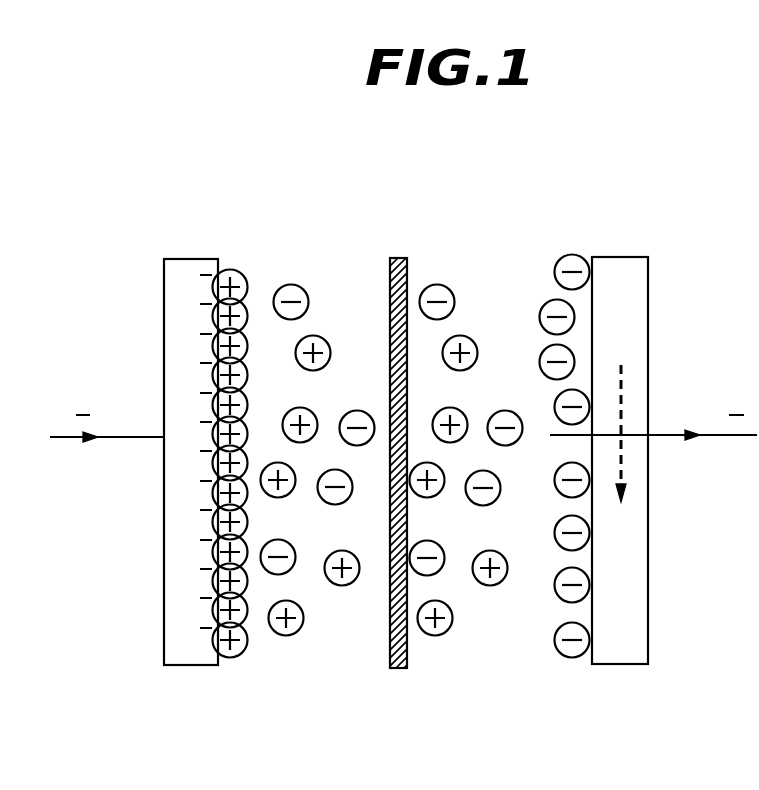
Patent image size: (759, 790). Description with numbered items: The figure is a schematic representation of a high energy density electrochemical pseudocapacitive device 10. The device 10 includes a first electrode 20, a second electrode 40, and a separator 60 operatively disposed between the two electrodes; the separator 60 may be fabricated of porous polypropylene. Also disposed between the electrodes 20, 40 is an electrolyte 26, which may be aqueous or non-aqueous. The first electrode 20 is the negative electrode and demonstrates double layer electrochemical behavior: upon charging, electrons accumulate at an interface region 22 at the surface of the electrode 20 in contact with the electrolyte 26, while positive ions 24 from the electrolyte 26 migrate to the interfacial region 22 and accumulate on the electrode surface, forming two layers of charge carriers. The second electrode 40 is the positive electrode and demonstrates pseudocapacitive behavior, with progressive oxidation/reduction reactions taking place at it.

The electrochemical pseudocapacitive device 10 is at (513, 743).
The first electrode 20 is at (178, 258).
The interface region 22 is at (218, 270).
The positive ions 24 is at (246, 333).
The electrolyte 26 is at (372, 317).
The second electrode 40 is at (630, 257).
The separator 60 is at (402, 258).